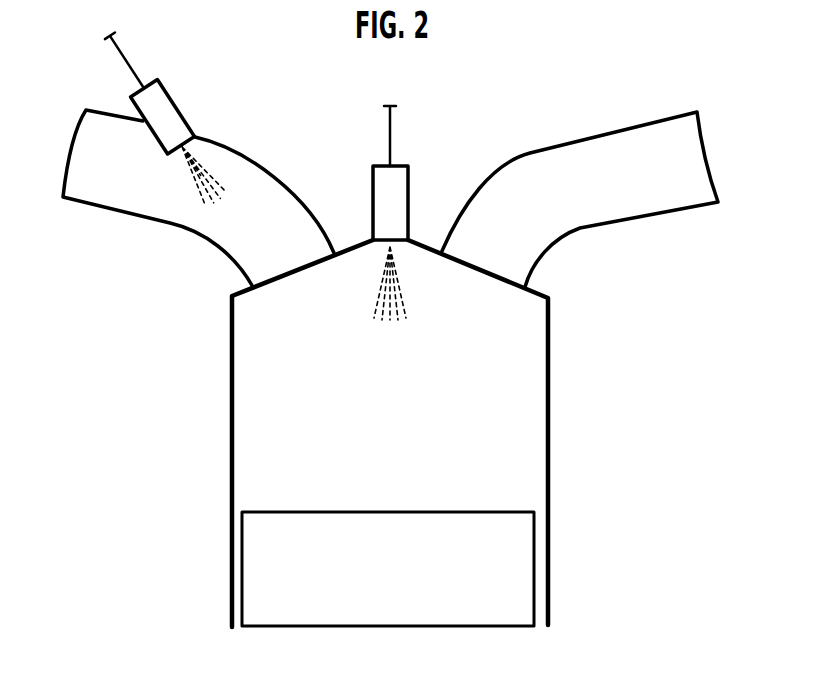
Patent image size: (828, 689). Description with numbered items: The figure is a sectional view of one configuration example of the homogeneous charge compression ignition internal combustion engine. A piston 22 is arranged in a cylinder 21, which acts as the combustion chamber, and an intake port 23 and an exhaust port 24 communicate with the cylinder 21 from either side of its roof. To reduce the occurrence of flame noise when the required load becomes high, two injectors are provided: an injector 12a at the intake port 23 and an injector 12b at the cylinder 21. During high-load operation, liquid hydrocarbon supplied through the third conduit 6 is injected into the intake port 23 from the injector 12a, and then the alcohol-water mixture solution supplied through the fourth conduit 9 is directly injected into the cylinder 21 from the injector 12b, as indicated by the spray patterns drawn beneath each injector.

The third conduit 6 is at (127, 53).
The fourth conduit 9 is at (395, 127).
The injector 12a is at (172, 92).
The injector 12b is at (408, 178).
The cylinder 21 is at (550, 421).
The piston 22 is at (535, 560).
The intake port 23 is at (260, 160).
The exhaust port 24 is at (643, 217).